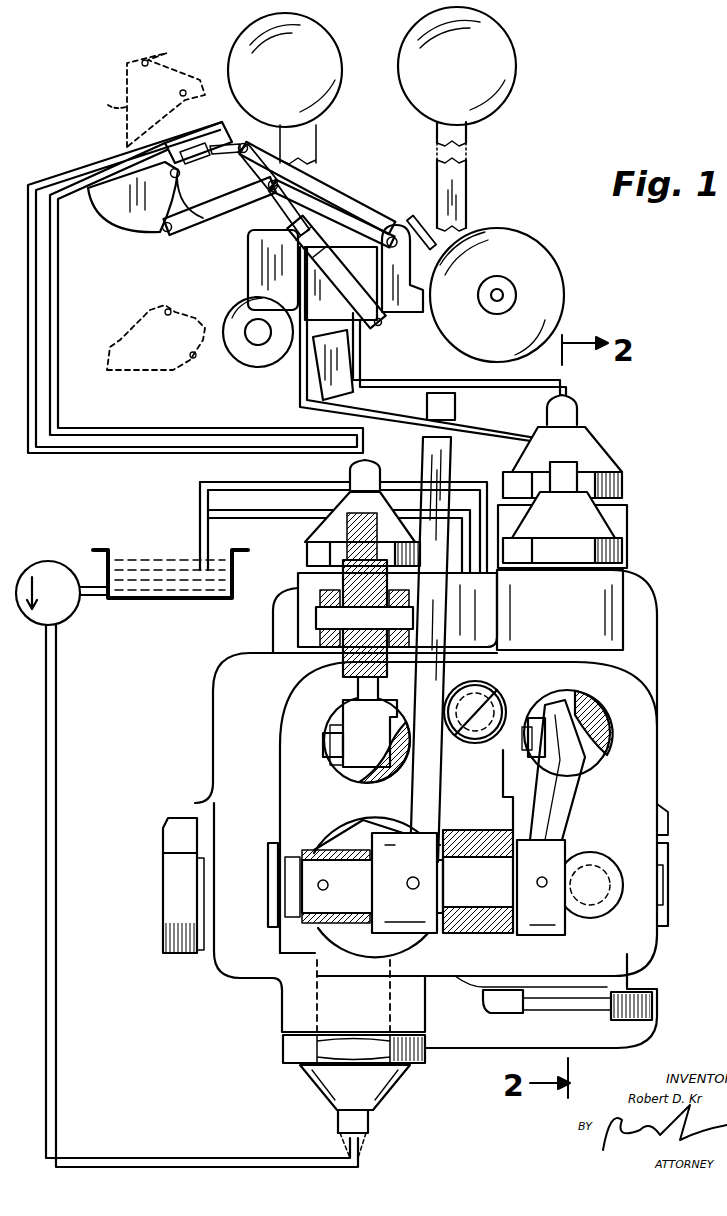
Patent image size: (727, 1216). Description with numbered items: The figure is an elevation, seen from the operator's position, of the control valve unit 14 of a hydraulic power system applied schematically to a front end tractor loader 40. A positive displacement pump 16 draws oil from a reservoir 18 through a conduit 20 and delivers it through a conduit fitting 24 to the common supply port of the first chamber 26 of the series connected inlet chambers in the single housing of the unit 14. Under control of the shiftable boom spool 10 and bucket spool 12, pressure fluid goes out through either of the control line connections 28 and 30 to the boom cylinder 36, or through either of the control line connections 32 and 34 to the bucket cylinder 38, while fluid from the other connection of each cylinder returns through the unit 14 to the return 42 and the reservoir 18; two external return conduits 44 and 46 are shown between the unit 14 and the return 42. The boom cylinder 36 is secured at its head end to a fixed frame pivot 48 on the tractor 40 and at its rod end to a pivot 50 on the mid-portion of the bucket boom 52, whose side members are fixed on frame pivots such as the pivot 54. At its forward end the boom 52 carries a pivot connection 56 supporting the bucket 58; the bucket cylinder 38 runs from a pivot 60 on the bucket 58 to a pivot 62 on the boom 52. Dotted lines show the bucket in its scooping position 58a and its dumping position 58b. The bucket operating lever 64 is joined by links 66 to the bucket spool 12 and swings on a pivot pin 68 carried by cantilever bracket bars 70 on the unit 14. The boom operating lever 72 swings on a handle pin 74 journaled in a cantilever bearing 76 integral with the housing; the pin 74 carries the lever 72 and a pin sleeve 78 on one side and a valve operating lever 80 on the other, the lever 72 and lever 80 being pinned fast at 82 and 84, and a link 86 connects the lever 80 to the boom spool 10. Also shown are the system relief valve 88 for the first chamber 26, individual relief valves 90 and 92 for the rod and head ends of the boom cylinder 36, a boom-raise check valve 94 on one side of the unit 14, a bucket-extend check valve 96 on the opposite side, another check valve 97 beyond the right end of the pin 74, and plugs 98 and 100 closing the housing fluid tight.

The boom spool 10 is at (598, 722).
The bucket spool 12 is at (398, 790).
The valve unit 14 is at (648, 595).
The positive displacement pump 16 is at (35, 560).
The reservoir 18 is at (125, 553).
The conduit 20 is at (92, 580).
The conduit fitting 24 is at (283, 1050).
The first chamber 26 is at (317, 1005).
The control line connection 28 is at (512, 384).
The control line connection 30 is at (508, 418).
The control line connection 32 is at (48, 180).
The control line connection 34 is at (60, 288).
The boom cylinder 36 is at (345, 296).
The bucket cylinder 38 is at (212, 132).
The tractor loader 40 is at (250, 240).
The return 42 is at (198, 538).
The external return conduit 44 is at (298, 518).
The external return conduit 46 is at (300, 478).
The fixed frame pivot 48 is at (378, 325).
The pivot 50 is at (262, 199).
The bucket boom 52 is at (350, 210).
The pivot 54 is at (395, 225).
The pivot connection 56 is at (170, 232).
The bucket 58 is at (110, 210).
The bucket scooping position 58a is at (138, 337).
The bucket dumping position 58b is at (146, 100).
The pivot 60 is at (200, 215).
The pivot 62 is at (244, 140).
The bucket operating lever 64 is at (316, 168).
The links 66 is at (330, 722).
The pivot pin 68 is at (328, 620).
The cantilever bracket bars 70 is at (298, 596).
The boom operating lever 72 is at (469, 185).
The handle pin 74 is at (305, 898).
The cantilever bearing 76 is at (485, 828).
The pin sleeve 78 is at (300, 935).
The valve operating lever 80 is at (575, 805).
The pin 82 is at (410, 890).
The pin 84 is at (548, 888).
The link 86 is at (533, 705).
The system relief valve 88 is at (178, 816).
The individual relief valve 90 is at (490, 686).
The individual relief valve 92 is at (653, 1000).
The boom-raise check valve 94 is at (669, 860).
The bucket-extend check valve 96 is at (266, 870).
The check valve 97 is at (598, 845).
The plug 98 is at (500, 1012).
The plug 100 is at (337, 825).